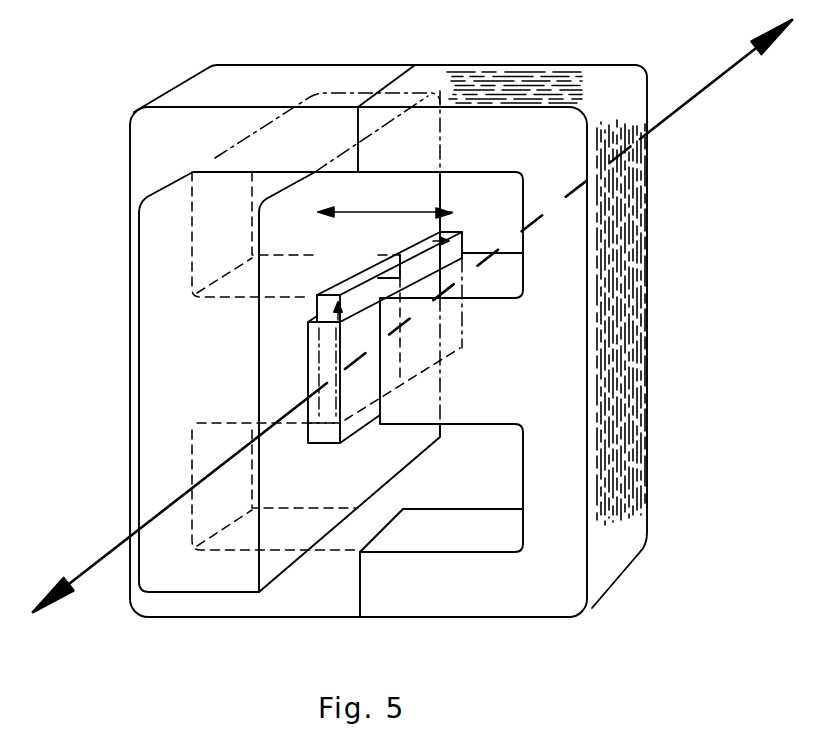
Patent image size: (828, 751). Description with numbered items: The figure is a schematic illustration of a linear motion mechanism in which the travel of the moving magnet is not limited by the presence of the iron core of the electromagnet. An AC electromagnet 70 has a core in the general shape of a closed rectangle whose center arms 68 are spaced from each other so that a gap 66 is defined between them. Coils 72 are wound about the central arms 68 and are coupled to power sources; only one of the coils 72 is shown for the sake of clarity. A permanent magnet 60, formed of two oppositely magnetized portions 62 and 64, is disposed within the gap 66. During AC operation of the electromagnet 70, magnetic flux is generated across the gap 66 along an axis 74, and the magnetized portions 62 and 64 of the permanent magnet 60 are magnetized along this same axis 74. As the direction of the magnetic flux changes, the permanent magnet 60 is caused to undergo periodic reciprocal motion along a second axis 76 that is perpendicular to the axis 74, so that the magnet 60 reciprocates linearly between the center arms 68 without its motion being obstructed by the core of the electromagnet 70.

The permanent magnet 60 is at (385, 347).
The magnetized portion 62 is at (328, 355).
The magnetized portion 64 is at (457, 242).
The gap 66 is at (421, 254).
The center arms 68 is at (277, 395).
The AC electromagnet 70 is at (538, 90).
The coils 72 is at (162, 253).
The axis 74 is at (366, 212).
The axis 76 is at (690, 102).